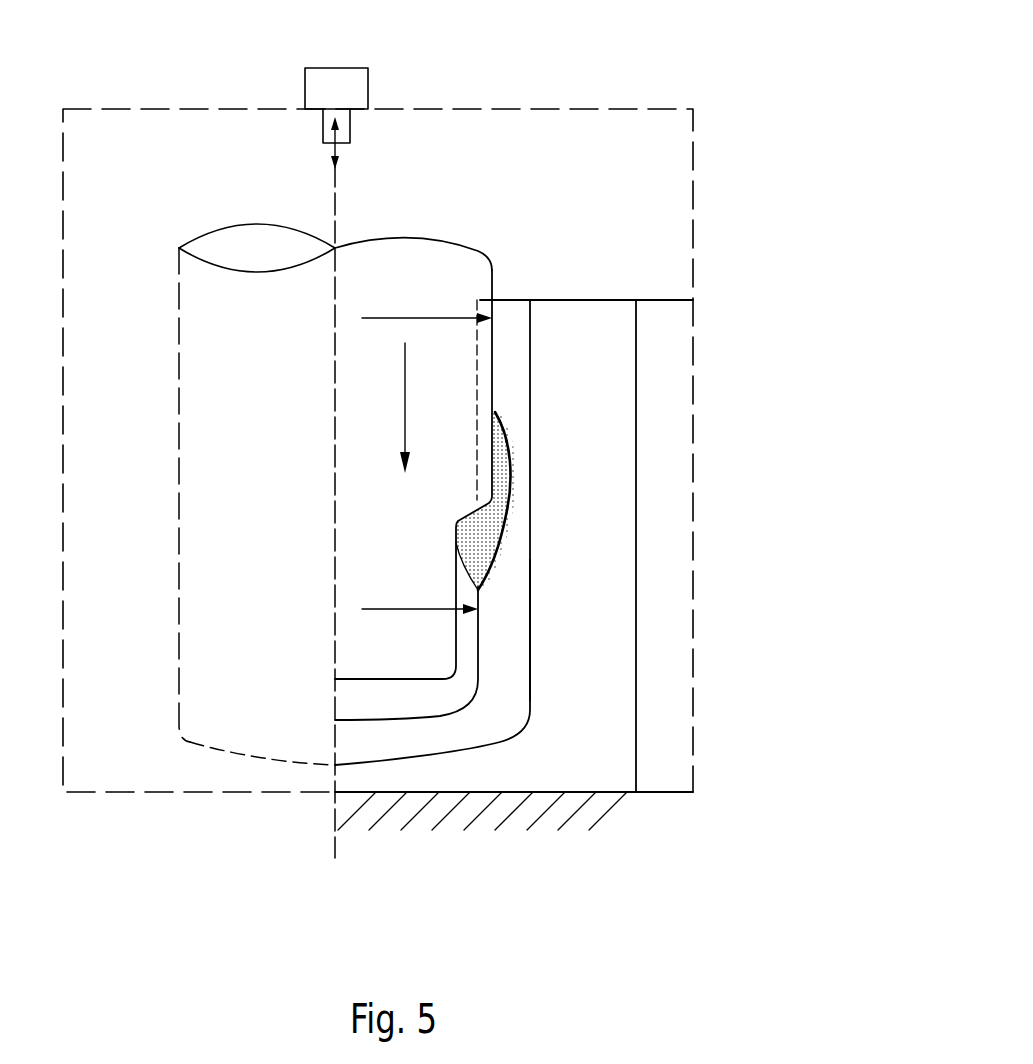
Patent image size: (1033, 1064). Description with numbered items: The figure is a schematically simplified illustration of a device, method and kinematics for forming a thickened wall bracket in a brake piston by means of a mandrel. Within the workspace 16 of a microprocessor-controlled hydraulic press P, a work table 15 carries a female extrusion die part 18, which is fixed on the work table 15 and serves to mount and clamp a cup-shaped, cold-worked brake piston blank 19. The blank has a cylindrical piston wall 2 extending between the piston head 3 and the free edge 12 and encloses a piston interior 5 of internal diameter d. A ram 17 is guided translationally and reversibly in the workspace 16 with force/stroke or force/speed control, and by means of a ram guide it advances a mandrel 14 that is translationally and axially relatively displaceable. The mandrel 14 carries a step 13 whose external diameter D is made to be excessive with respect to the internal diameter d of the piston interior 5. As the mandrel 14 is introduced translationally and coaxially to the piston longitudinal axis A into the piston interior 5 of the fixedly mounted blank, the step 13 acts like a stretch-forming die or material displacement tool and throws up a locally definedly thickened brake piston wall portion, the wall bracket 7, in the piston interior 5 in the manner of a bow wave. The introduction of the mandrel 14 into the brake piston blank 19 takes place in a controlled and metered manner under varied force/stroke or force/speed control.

The piston wall 2 is at (513, 375).
The piston head 3 is at (403, 738).
The piston interior 5 is at (352, 710).
The wall bracket 7 is at (505, 547).
The edge 12 is at (512, 297).
The step 13 is at (492, 465).
The mandrel 14 is at (450, 256).
The work table 15 is at (533, 808).
The workspace 16 is at (622, 143).
The ram 17 is at (350, 128).
The female extrusion die part 18 is at (605, 456).
The brake piston blank 19 is at (560, 662).